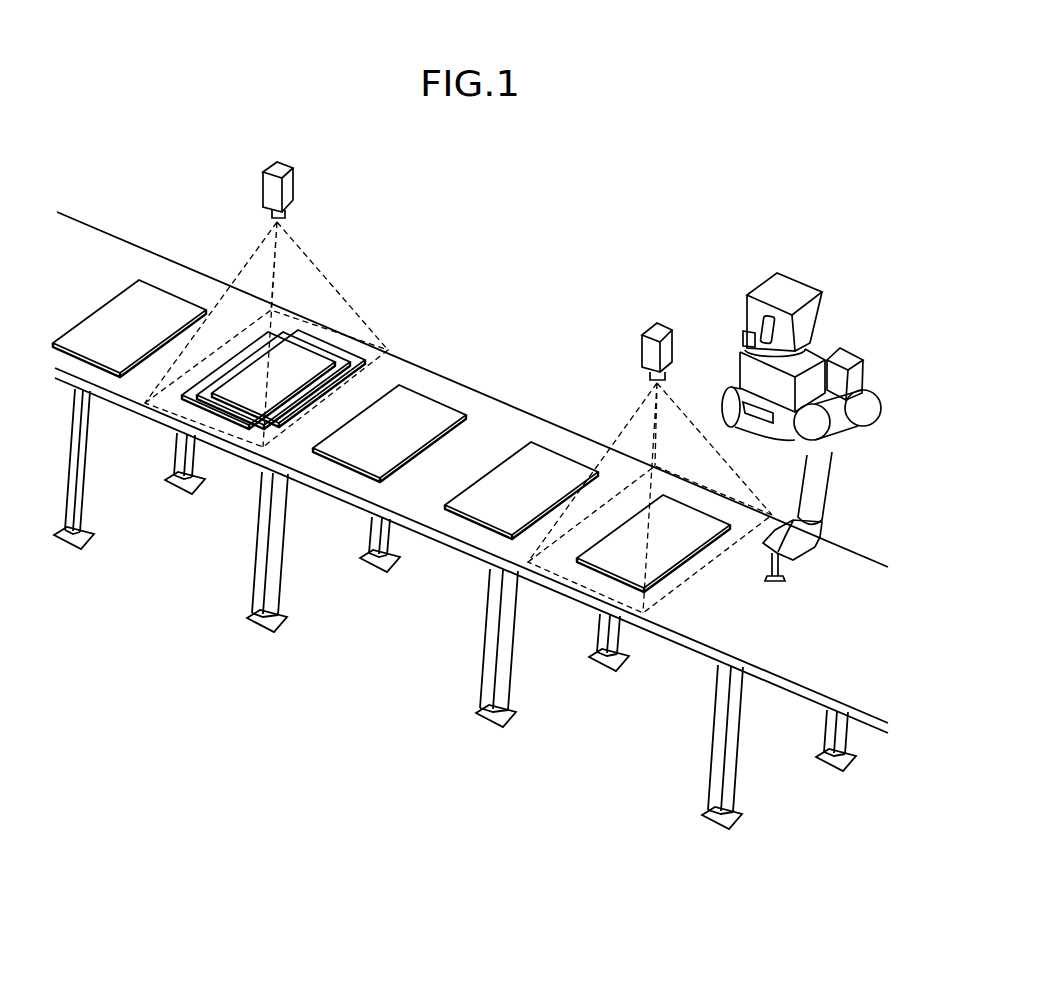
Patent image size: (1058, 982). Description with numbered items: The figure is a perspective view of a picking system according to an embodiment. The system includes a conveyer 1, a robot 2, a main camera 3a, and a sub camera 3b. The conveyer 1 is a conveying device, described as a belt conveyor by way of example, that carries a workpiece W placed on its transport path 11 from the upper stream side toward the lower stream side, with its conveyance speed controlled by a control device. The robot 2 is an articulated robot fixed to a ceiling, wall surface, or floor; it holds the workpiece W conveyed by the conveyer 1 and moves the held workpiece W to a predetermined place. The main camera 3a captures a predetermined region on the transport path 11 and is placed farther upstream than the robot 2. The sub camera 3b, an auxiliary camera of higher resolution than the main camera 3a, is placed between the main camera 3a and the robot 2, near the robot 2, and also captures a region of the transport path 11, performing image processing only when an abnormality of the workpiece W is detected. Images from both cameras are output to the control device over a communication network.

The conveyer 1 is at (128, 202).
The transport path 11 is at (78, 228).
The workpiece W is at (158, 300).
The main camera 3a is at (280, 168).
The sub camera 3b is at (660, 328).
The robot 2 is at (792, 283).